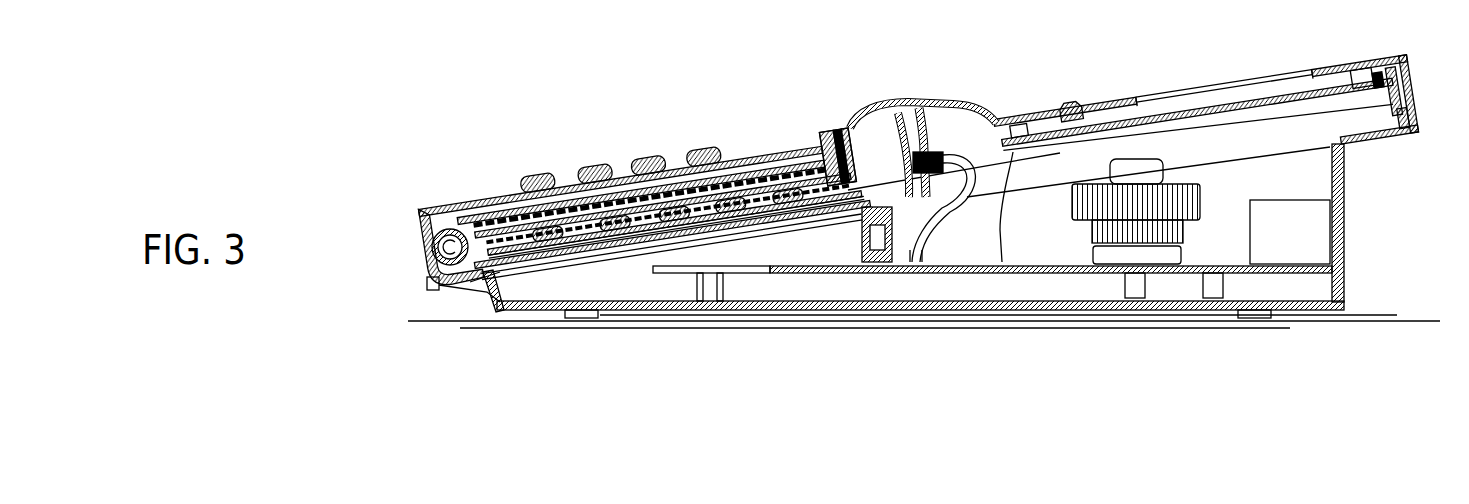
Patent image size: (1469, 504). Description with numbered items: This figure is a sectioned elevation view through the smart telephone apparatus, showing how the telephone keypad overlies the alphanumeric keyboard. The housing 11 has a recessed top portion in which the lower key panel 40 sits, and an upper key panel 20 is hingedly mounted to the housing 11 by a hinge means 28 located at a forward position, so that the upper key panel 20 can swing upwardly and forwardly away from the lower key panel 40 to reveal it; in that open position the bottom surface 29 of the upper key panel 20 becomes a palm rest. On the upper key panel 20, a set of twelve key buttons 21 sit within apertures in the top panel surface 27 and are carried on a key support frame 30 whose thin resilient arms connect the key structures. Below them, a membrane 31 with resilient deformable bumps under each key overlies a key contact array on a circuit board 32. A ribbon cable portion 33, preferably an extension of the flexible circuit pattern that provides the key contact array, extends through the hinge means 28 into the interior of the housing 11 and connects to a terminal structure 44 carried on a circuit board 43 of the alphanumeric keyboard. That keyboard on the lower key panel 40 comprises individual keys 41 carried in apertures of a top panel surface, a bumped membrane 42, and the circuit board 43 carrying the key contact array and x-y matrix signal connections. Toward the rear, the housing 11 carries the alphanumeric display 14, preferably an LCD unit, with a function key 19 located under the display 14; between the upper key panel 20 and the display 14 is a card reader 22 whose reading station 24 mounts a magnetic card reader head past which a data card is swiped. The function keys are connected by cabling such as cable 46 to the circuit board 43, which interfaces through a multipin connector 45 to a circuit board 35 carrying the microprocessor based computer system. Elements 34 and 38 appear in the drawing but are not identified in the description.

The housing 11 is at (1372, 60).
The alphanumeric display 14 is at (1286, 76).
The function key 19 is at (1072, 105).
The upper key panel 20 is at (623, 166).
The key buttons 21 is at (688, 165).
The card reader 22 is at (906, 108).
The reading station 24 is at (938, 152).
The top panel surface 27 is at (473, 200).
The hinge means 28 is at (432, 277).
The bottom surface 29 is at (480, 285).
The key support frame 30 is at (578, 180).
The membrane 31 is at (514, 200).
The circuit board 32 is at (785, 175).
The ribbon cable portion 33 is at (462, 224).
The display module 34 is at (1213, 108).
The circuit board 35 is at (1243, 262).
The lower housing wall 38 is at (604, 274).
The lower key panel 40 is at (720, 232).
The keys 41 is at (500, 292).
The bumped membrane 42 is at (572, 264).
The circuit board 43 is at (657, 228).
The terminal structure 44 is at (845, 212).
The multipin connector 45 is at (903, 264).
The cable 46 is at (1002, 262).